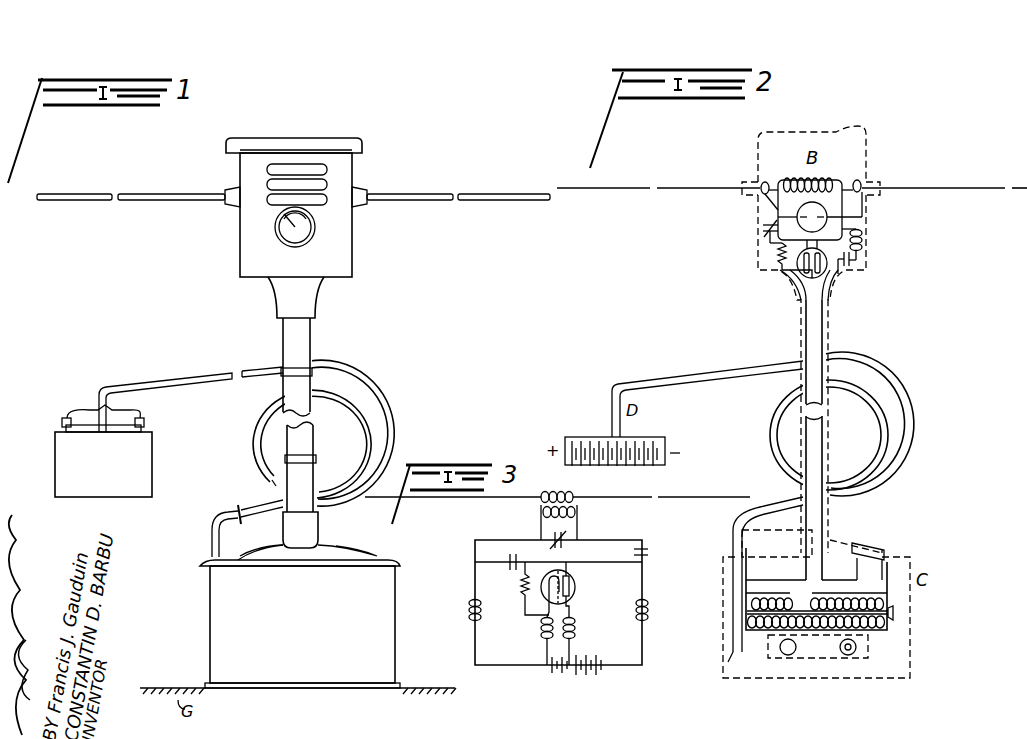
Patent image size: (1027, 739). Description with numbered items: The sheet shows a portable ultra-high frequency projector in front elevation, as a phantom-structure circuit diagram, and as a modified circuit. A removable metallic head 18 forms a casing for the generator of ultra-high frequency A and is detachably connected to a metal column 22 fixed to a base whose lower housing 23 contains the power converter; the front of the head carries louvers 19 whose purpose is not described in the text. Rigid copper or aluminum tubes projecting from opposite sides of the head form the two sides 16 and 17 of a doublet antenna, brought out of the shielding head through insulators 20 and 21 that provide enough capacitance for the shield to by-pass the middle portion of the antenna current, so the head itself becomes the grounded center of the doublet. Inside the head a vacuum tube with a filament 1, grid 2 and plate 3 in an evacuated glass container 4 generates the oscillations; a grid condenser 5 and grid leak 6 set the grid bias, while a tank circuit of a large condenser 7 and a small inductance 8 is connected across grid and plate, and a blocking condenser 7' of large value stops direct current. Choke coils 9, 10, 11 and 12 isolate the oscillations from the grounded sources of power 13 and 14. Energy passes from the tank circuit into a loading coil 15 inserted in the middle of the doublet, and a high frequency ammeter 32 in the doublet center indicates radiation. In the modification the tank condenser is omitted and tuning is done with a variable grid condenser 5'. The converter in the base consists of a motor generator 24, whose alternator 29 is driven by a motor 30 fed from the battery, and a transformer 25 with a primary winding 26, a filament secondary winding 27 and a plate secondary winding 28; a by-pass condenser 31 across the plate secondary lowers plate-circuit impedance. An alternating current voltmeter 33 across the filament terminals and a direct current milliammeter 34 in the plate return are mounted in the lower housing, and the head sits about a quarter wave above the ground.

In FIG. 3, the filament 1 is at (564, 579).
In FIG. 3, the grid 2 is at (552, 577).
In FIG. 3, the plate 3 is at (572, 591).
In FIG. 3, the evacuated glass container 4 is at (570, 579).
In FIG. 3, the grid condenser 5 is at (500, 556).
In FIG. 2, the variable grid condenser 5' is at (746, 229).
In FIG. 3, the grid leak 6 is at (522, 589).
In FIG. 3, the large condenser 7 is at (542, 534).
In FIG. 3, the blocking condenser 7' is at (654, 554).
In FIG. 2, the small inductance 8 is at (819, 181).
In FIG. 3, the small inductance 8 is at (576, 518).
In FIG. 3, the choke coil 9 is at (469, 609).
In FIG. 2, the choke coil 10 is at (866, 240).
In FIG. 3, the choke coil 10 is at (650, 609).
In FIG. 3, the choke coil 11 is at (541, 633).
In FIG. 3, the choke coil 12 is at (575, 631).
In FIG. 3, the source of power 13 is at (550, 676).
In FIG. 3, the source of power 14 is at (592, 680).
In FIG. 2, the loading coil 15 is at (765, 182).
In FIG. 3, the loading coil 15 is at (564, 494).
In FIG. 1, the doublet antenna side 16 is at (147, 200).
In FIG. 2, the doublet antenna side 16 is at (687, 190).
In FIG. 3, the doublet antenna side 16 is at (512, 500).
In FIG. 1, the doublet antenna side 17 is at (423, 200).
In FIG. 2, the doublet antenna side 17 is at (996, 190).
In FIG. 3, the doublet antenna side 17 is at (637, 498).
In FIG. 1, the metallic head 18 is at (310, 141).
In FIG. 2, the metallic head 18 is at (870, 128).
In FIG. 1, the ventilating louvers 19 is at (268, 200).
In FIG. 1, the insulator 20 is at (232, 185).
In FIG. 2, the insulator 20 is at (746, 178).
In FIG. 1, the insulator 21 is at (359, 186).
In FIG. 2, the insulator 21 is at (886, 178).
In FIG. 1, the metal column 22 is at (310, 338).
In FIG. 2, the metal column 22 is at (842, 425).
In FIG. 1, the lower housing 23 is at (366, 608).
In FIG. 2, the motor generator 24 is at (878, 688).
In FIG. 2, the transformer 25 is at (894, 612).
In FIG. 2, the primary winding 26 is at (748, 625).
In FIG. 2, the filament secondary winding 27 is at (762, 598).
In FIG. 2, the plate secondary winding 28 is at (858, 598).
In FIG. 2, the alternator 29 is at (848, 656).
In FIG. 2, the motor 30 is at (790, 656).
In FIG. 2, the by-pass condenser 31 is at (848, 270).
In FIG. 1, the high frequency ammeter 32 is at (314, 227).
In FIG. 2, the high frequency ammeter 32 is at (770, 204).
In FIG. 1, the alternating current voltmeter 33 is at (239, 549).
In FIG. 2, the alternating current voltmeter 33 is at (759, 549).
In FIG. 1, the direct current milliammeter 34 is at (350, 554).
In FIG. 2, the direct current milliammeter 34 is at (880, 548).
In FIG. 2, the generator of ultra-high frequency A is at (851, 220).